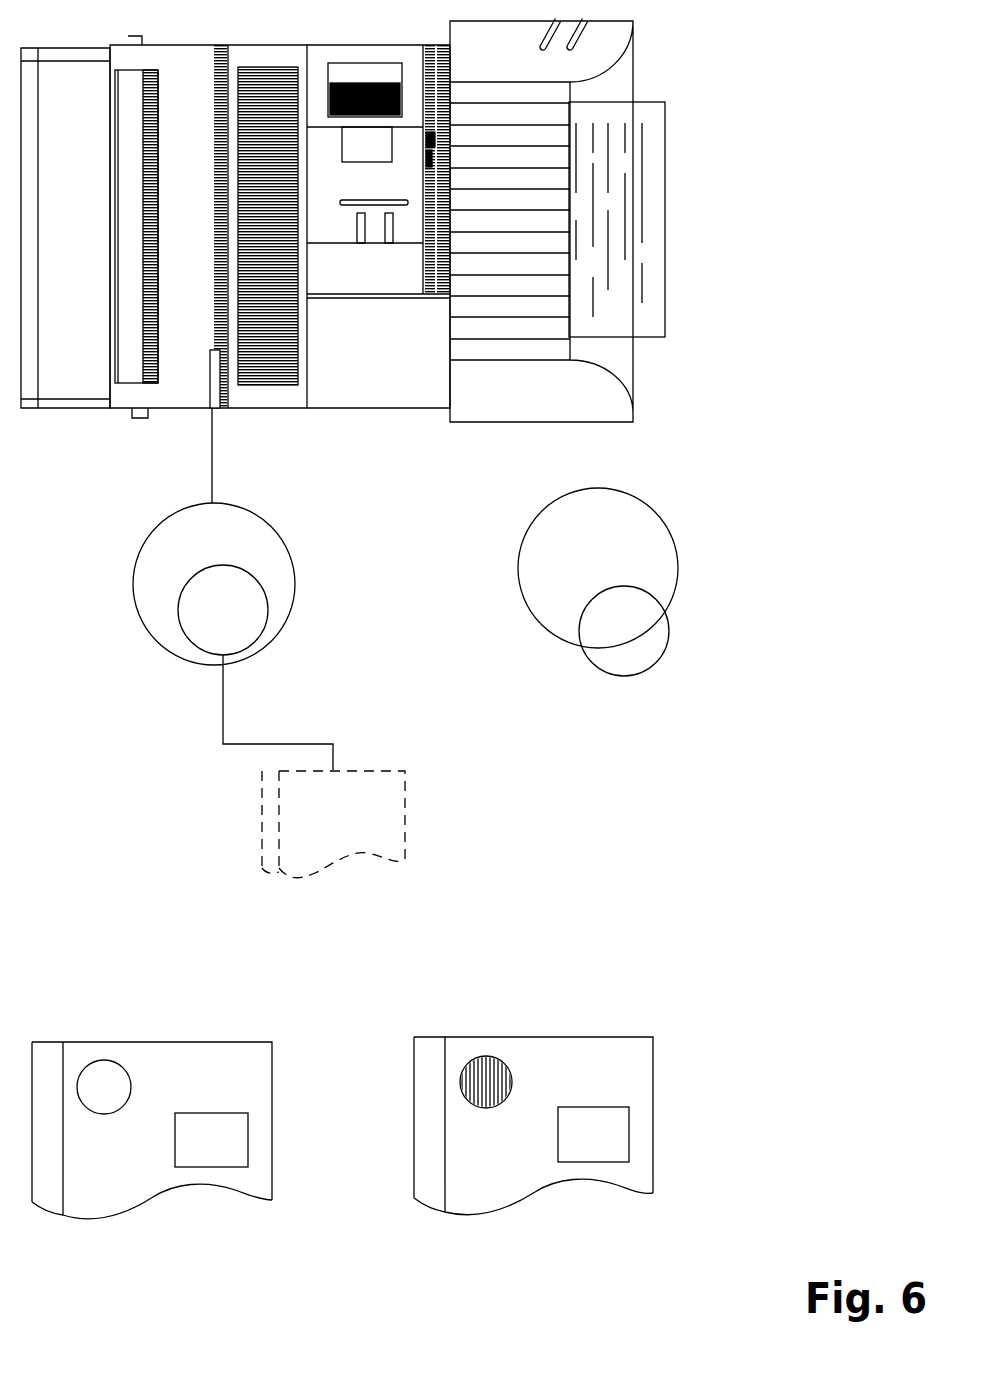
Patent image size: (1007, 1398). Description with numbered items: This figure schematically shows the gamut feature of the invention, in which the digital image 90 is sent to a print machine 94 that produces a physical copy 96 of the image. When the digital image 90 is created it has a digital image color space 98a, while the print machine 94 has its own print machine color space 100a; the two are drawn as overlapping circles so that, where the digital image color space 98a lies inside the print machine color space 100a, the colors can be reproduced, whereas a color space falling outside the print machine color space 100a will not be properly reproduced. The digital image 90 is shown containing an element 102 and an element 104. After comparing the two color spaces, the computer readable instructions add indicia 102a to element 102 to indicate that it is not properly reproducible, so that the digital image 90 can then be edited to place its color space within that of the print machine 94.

The digital image 90 is at (405, 785).
The print machine 94 is at (132, 425).
The physical copy 96 is at (665, 183).
The digital image color space 98a is at (267, 626).
The print machine color space 100a is at (132, 586).
The element 102 is at (132, 1087).
The indicia 102a is at (478, 1082).
The element 104 is at (212, 1167).